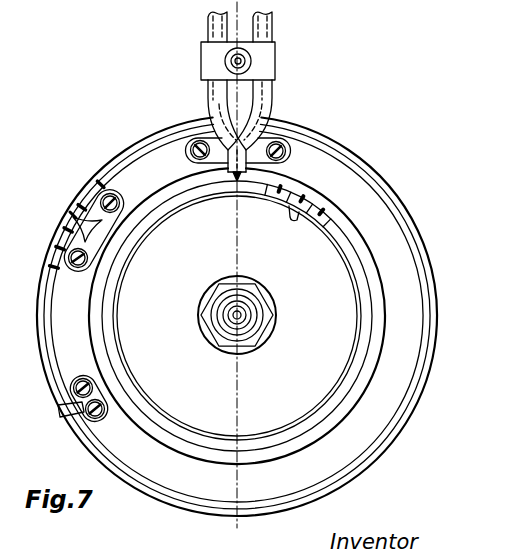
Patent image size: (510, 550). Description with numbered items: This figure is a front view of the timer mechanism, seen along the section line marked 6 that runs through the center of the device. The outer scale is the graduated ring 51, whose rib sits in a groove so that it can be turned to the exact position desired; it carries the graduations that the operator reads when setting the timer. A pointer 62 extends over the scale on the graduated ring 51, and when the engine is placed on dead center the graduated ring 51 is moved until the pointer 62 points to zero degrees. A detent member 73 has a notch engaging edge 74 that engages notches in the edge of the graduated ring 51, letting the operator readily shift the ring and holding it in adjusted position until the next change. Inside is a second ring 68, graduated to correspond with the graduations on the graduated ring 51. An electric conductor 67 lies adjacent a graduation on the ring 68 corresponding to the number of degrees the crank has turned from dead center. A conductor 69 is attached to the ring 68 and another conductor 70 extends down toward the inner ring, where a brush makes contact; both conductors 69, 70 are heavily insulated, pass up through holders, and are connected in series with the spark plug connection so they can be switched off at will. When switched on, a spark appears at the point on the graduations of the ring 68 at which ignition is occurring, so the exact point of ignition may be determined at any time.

The section line 6- 6 is at (238, 5).
The graduated ring 51 is at (94, 181).
The pointer 62 is at (76, 404).
The electric conductor 67 is at (292, 221).
The ring 68 is at (326, 220).
The conductor 69 is at (266, 100).
The conductor 70 is at (216, 96).
The detent member 73 is at (102, 210).
The notch engaging edge 74 is at (73, 214).